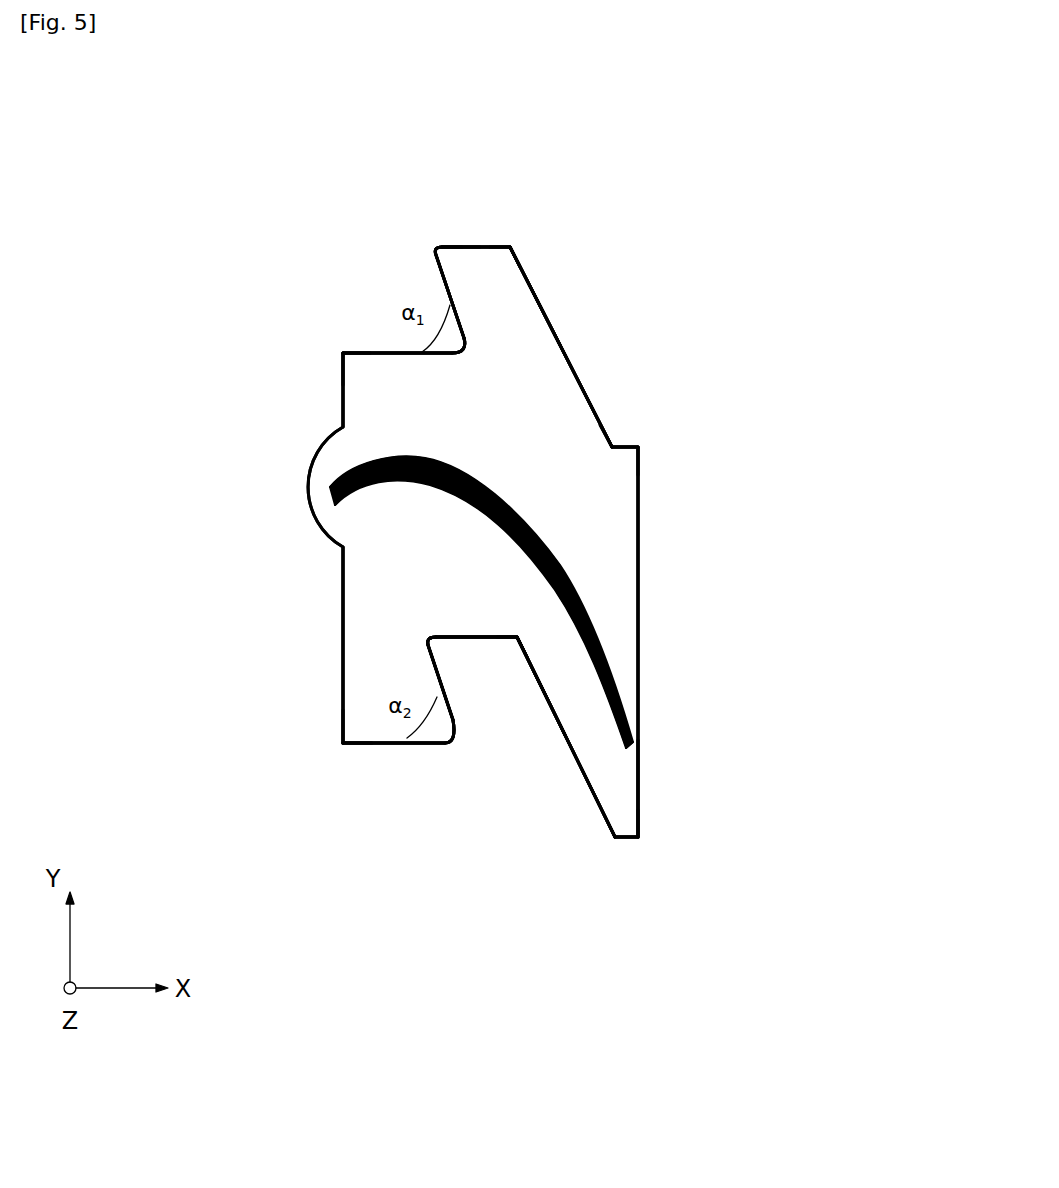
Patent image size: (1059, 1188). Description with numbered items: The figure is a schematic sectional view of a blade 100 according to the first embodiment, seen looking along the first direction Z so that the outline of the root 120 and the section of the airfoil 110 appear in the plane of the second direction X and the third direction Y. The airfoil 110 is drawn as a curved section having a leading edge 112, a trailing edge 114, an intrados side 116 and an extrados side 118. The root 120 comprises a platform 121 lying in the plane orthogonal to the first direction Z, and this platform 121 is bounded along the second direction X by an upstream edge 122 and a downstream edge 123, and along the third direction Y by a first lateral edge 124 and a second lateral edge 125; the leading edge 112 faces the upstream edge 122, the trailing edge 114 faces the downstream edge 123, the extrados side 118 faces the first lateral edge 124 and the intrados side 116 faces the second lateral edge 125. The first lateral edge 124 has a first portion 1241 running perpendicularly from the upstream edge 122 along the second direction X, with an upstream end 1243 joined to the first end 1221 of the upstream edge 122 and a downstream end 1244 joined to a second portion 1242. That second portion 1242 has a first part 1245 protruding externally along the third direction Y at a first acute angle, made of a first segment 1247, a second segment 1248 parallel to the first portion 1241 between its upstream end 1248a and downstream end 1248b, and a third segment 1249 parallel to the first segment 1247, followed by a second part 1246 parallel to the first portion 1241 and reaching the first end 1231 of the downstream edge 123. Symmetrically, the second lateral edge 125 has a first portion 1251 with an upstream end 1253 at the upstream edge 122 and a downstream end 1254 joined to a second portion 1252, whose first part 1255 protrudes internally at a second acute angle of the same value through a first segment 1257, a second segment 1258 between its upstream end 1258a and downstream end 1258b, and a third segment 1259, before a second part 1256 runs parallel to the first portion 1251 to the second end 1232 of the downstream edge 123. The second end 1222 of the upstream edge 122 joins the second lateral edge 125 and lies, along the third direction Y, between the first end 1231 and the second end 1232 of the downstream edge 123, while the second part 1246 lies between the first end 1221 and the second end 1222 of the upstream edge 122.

The blade 100 is at (240, 468).
The airfoil 110 is at (530, 535).
The leading edge 112 is at (330, 498).
The trailing edge 114 is at (628, 722).
The intrados side 116 is at (400, 488).
The extrados side 118 is at (370, 463).
The root 120 is at (650, 505).
The platform 121 is at (620, 773).
The upstream edge 122 is at (343, 568).
The downstream edge 123 is at (638, 596).
The first lateral edge 124 is at (528, 273).
The second lateral edge 125 is at (582, 800).
The first end of the upstream edge 1221 is at (343, 353).
The second end of the upstream edge 1222 is at (343, 732).
The first end of the downstream edge 1231 is at (638, 450).
The second end of the downstream edge 1232 is at (638, 835).
The first portion of the first lateral edge 1241 is at (390, 355).
The second portion of the first lateral edge 1242 is at (527, 350).
The upstream end of the first portion of the first lateral edge 1243 is at (352, 353).
The downstream end of the first portion of the first lateral edge 1244 is at (467, 350).
The first part of the second portion of the first lateral edge 1245 is at (460, 247).
The second part of the second portion of the first lateral edge 1246 is at (625, 447).
The first segment 1247 is at (430, 258).
The second segment 1248 is at (498, 247).
The upstream end of the second segment 1248a is at (460, 262).
The downstream end of the second segment 1248b is at (511, 247).
The third segment 1249 is at (543, 300).
The first portion of the second lateral edge 1251 is at (397, 743).
The second portion of the second lateral edge 1252 is at (510, 707).
The upstream end of the first portion of the second lateral edge 1253 is at (354, 743).
The downstream end of the first portion of the second lateral edge 1254 is at (454, 747).
The first part of the second portion of the second lateral edge 1255 is at (485, 652).
The second part of the second portion of the second lateral edge 1256 is at (628, 838).
The first segment 1257 is at (430, 673).
The second segment 1258 is at (455, 637).
The upstream end of the second segment 1258a is at (428, 640).
The downstream end of the second segment 1258b is at (520, 637).
The third segment 1259 is at (563, 733).